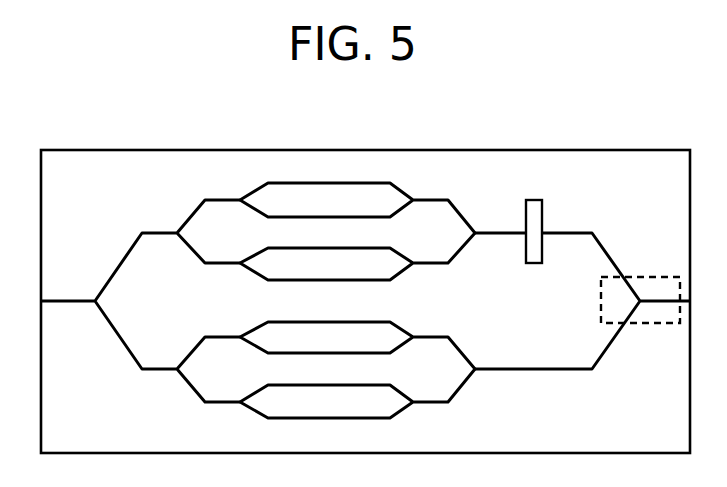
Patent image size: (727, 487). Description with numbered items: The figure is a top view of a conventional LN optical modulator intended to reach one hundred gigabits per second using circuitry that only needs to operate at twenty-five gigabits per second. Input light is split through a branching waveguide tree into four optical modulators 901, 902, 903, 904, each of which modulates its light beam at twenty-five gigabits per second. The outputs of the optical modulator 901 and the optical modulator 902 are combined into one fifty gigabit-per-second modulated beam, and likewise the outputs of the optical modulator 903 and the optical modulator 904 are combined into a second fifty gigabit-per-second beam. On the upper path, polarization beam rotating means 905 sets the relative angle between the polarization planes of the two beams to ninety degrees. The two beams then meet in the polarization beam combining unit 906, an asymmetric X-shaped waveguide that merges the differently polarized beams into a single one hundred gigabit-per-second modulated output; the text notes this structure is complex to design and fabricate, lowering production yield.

The optical modulator 901 is at (395, 199).
The optical modulator 902 is at (395, 262).
The optical modulator 903 is at (395, 336).
The optical modulator 904 is at (395, 399).
The polarization beam rotating means 905 is at (532, 198).
The polarization beam combining unit 906 is at (643, 275).